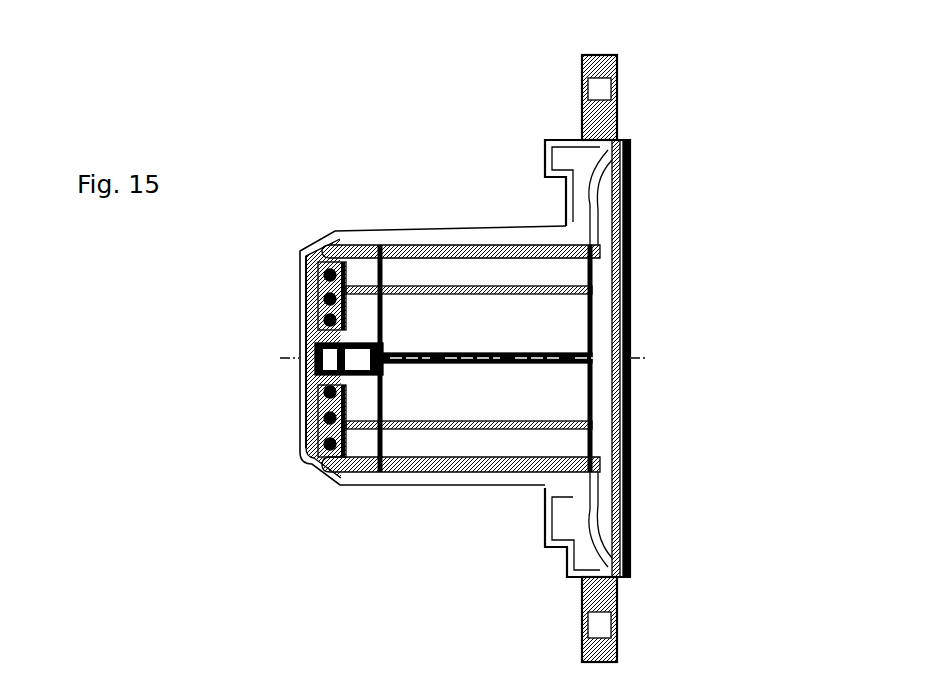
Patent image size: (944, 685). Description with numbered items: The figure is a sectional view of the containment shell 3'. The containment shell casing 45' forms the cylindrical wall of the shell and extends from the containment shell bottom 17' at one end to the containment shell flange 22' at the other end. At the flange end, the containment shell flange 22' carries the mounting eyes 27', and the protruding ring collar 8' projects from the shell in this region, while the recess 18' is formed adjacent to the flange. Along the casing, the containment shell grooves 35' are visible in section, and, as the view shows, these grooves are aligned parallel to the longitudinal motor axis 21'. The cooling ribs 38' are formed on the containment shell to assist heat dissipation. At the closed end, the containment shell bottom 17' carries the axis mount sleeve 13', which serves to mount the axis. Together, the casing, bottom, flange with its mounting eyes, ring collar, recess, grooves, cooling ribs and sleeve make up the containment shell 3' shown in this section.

The containment shell 3' is at (489, 338).
The mounting eyes 27' is at (645, 338).
The longitudinal motor axis 21' is at (634, 358).
The recess 18' is at (637, 326).
The containment shell flange 22' is at (638, 521).
The cooling ribs 38' is at (433, 353).
The containment shell bottom 17' is at (287, 358).
The axis mount sleeve 13' is at (349, 409).
The protruding ring collar 8' is at (517, 358).
The containment shell casing 45' is at (461, 503).
The containment shell grooves 35' is at (464, 357).